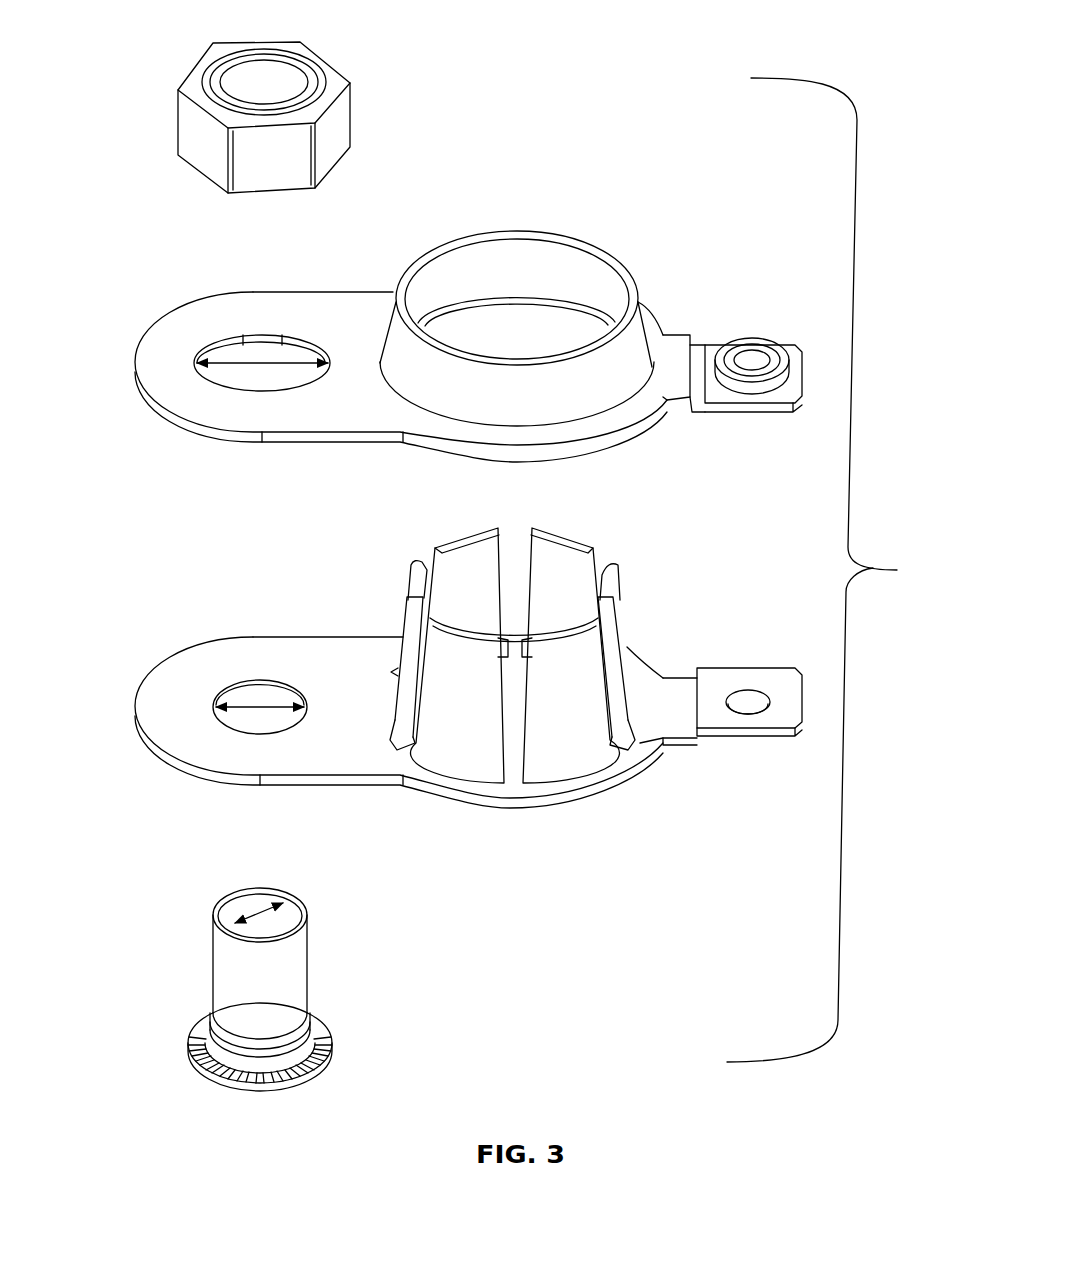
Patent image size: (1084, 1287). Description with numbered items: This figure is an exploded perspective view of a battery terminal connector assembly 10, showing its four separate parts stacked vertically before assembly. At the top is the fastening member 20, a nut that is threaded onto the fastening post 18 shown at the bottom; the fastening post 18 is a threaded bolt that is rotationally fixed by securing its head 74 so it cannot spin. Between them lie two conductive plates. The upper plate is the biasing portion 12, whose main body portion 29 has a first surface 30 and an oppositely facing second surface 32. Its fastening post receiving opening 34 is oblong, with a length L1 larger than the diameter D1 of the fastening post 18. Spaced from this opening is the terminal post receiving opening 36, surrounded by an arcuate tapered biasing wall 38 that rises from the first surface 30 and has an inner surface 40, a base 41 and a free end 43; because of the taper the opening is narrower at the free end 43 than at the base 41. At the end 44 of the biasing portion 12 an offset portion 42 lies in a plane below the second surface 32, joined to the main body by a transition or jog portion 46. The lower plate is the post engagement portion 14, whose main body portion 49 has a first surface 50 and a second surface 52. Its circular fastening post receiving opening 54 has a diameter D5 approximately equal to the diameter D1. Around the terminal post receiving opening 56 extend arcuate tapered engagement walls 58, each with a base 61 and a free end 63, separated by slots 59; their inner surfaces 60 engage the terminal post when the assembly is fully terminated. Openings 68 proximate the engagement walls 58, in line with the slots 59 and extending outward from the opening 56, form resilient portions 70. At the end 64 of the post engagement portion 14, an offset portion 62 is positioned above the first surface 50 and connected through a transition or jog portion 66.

The battery terminal connector assembly 10 is at (897, 570).
The biasing portion 12 is at (480, 329).
The post engagement portion 14 is at (472, 682).
The fastening post 18 is at (276, 978).
The fastening member 20 is at (327, 62).
The main body portion 29 is at (310, 417).
The first surface 30 is at (205, 313).
The second surface 32 is at (210, 437).
The fastening post receiving opening 34 is at (302, 343).
The terminal post receiving opening 36 is at (488, 265).
The biasing wall 38 is at (642, 280).
The inner surface 40 is at (557, 280).
The base 41 is at (420, 440).
The offset portion 42 is at (798, 383).
The free end 43 is at (597, 252).
The end 44 is at (790, 348).
The transition or jog portion 46 is at (695, 357).
The main body portion 49 is at (312, 657).
The first surface 50 is at (232, 655).
The second surface 52 is at (290, 785).
The fastening post receiving opening 54 is at (237, 727).
The terminal post receiving opening 56 is at (522, 682).
The engagement walls 58 is at (477, 718).
The slots 59 is at (513, 555).
The inner surfaces 60 is at (468, 555).
The base 61 is at (443, 760).
The offset portion 62 is at (763, 680).
The free end 63 is at (423, 577).
The end 64 is at (803, 707).
The transition or jog portion 66 is at (697, 748).
The openings 68 is at (510, 777).
The resilient portions 70 is at (482, 782).
The head 74 is at (333, 1033).
The length L1 is at (262, 362).
The diameter D5 is at (260, 705).
The diameter D1 is at (258, 912).